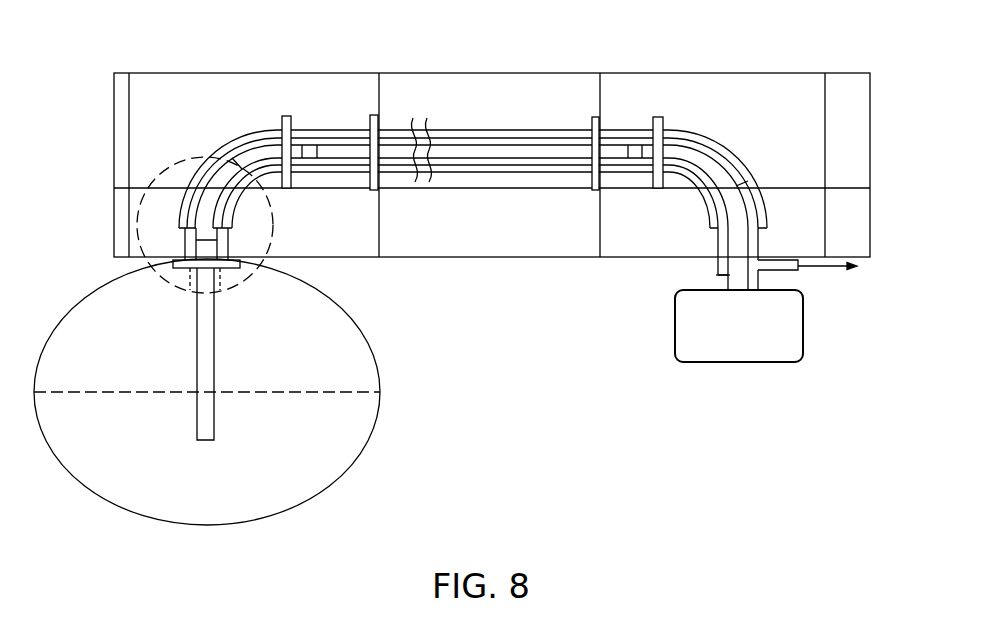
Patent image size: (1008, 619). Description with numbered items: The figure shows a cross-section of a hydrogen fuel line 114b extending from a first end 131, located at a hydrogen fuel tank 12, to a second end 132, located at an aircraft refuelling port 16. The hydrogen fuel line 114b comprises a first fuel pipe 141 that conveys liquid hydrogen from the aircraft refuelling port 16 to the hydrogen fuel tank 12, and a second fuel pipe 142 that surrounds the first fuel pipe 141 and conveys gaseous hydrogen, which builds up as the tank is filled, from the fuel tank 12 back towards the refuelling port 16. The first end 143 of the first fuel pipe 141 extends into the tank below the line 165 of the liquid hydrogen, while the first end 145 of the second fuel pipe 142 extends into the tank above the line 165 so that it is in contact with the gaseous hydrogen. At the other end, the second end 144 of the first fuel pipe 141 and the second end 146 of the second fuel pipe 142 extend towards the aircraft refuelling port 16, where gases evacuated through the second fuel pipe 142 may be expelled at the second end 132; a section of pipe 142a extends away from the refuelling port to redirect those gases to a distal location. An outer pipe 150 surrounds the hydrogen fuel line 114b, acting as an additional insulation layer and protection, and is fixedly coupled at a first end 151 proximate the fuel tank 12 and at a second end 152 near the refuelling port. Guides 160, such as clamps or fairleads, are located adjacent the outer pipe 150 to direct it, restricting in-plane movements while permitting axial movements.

The hydrogen fuel tank 12 is at (173, 523).
The aircraft refuelling port 16 is at (769, 342).
The hydrogen fuel line 114b is at (688, 113).
The first end 131 is at (237, 333).
The second end 132 is at (735, 295).
The first fuel pipe 141 is at (750, 170).
The second fuel pipe 142 is at (566, 128).
The section of pipe 142a is at (797, 272).
The first end of the first fuel pipe 143 is at (211, 432).
The second end of the first fuel pipe 144 is at (727, 276).
The first end of the second fuel pipe 145 is at (237, 268).
The second end of the second fuel pipe 146 is at (760, 288).
The outer pipe 150 is at (333, 132).
The first end of the outer pipe 151 is at (183, 268).
The second end of the outer pipe 152 is at (720, 263).
The guides 160 is at (222, 148).
The line of the liquid hydrogen 165 is at (338, 395).